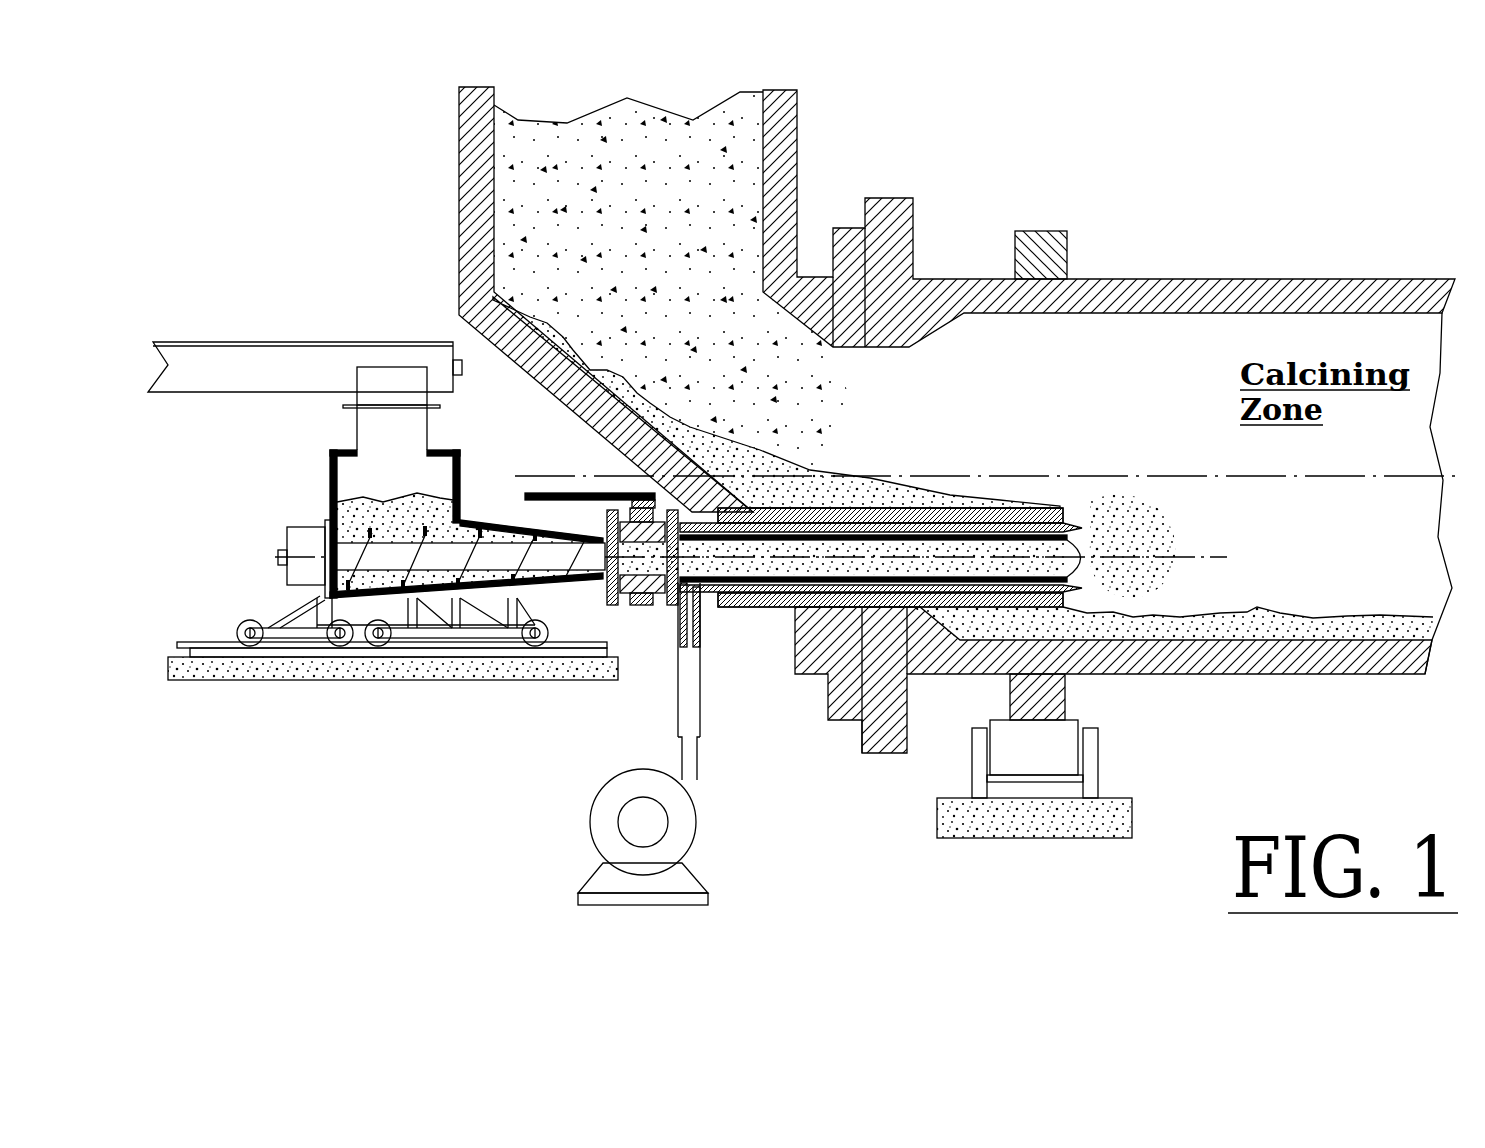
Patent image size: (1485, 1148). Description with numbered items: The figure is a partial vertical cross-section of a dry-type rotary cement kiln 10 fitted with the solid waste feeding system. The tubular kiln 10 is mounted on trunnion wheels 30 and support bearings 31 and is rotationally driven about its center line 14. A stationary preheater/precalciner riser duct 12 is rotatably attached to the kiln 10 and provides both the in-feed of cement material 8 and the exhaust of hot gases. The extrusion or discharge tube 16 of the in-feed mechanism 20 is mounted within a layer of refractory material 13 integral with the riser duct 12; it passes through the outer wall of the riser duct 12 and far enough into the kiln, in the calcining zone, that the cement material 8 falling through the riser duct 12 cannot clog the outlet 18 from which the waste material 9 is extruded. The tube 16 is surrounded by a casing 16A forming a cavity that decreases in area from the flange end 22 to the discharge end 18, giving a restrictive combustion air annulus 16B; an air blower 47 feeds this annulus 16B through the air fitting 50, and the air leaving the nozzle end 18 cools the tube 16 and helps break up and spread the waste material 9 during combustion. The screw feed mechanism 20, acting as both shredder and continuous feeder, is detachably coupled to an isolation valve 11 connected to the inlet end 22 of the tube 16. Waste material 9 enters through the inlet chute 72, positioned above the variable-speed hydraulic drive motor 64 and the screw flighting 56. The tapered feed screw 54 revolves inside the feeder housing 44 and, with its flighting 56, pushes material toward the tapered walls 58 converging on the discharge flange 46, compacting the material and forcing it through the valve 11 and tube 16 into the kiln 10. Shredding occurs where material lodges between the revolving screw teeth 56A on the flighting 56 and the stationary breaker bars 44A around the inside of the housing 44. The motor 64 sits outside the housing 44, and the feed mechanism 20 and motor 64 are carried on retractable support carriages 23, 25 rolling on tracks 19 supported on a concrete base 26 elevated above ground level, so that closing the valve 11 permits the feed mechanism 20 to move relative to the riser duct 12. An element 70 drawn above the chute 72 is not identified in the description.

The cement material 8 is at (667, 217).
The waste material 9 is at (407, 487).
The kiln 10 is at (1312, 280).
The isolation valve 11 is at (630, 491).
The riser duct 12 is at (458, 198).
The refractory material 13 is at (990, 525).
The center line 14 is at (1427, 476).
The extrusion or discharge tube 16 is at (1015, 510).
The casing 16A is at (938, 523).
The combustion air annulus 16B is at (732, 607).
The outlet 18 is at (1067, 528).
The tracks 19 is at (190, 642).
The screw feed mechanism 20 is at (313, 479).
The inlet end 22 is at (676, 606).
The retractable support carriage 23 is at (530, 622).
The retractable support carriage 25 is at (288, 612).
The concrete base 26 is at (200, 682).
The trunnion wheels 30 is at (1067, 255).
The support bearings 31 is at (1098, 768).
The feeder housing 44 is at (373, 598).
The stationary breaker bars 44A is at (413, 596).
The discharge flange 46 is at (607, 528).
The air blower 47 is at (698, 830).
The air fitting 50 is at (678, 672).
The feed screw 54 is at (418, 550).
The screw flighting 56 is at (403, 548).
The screw teeth 56A is at (527, 643).
The tapered walls 58 is at (478, 598).
The hydraulic drive motor 64 is at (307, 552).
The feed conveyor 70 is at (232, 340).
The inlet chute 72 is at (330, 455).